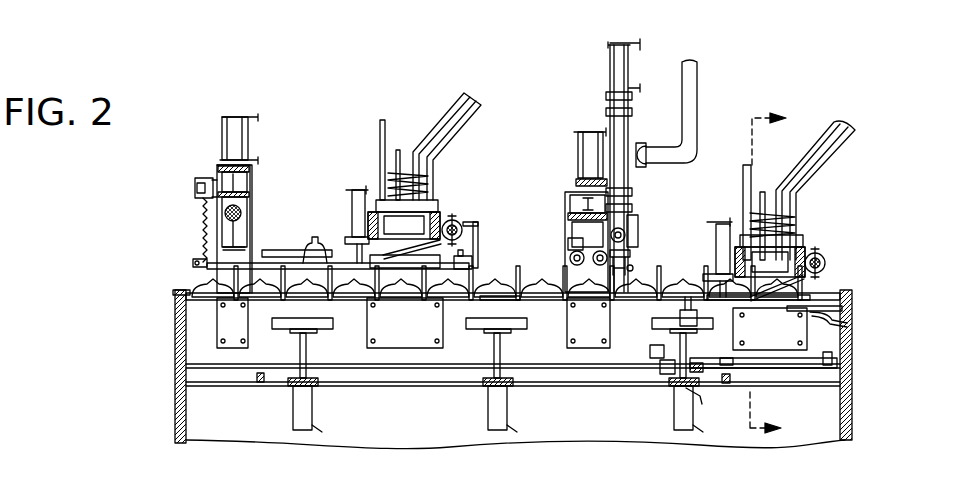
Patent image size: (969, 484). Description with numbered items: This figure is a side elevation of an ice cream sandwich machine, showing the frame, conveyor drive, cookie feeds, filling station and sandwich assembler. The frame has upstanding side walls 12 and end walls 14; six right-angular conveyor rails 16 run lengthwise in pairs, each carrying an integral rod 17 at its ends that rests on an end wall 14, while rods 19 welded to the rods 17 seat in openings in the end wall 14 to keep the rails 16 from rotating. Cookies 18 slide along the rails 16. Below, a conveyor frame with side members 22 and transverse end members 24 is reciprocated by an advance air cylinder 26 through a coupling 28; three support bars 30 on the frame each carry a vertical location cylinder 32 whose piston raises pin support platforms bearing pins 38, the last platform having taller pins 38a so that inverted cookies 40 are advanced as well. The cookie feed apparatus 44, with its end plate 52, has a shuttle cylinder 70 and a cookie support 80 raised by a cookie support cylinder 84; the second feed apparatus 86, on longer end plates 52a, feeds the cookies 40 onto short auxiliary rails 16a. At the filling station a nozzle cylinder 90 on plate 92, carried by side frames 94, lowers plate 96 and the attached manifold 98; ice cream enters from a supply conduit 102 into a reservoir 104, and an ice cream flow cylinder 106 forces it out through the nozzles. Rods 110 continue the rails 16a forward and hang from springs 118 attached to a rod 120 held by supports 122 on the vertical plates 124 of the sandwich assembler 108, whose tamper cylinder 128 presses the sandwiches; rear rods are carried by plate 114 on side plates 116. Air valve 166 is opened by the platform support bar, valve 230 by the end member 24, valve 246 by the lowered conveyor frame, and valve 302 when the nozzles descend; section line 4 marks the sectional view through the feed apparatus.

The section line 4- 4 is at (777, 265).
The side walls 12 is at (240, 438).
The end walls 14 is at (175, 347).
The conveyor rails 16 is at (190, 290).
The auxiliary conveyor rails 16a is at (300, 250).
The rods 17 is at (178, 298).
The cookies 18 is at (772, 220).
The rods 19 is at (845, 312).
The side members 22 is at (417, 384).
The end members 24 is at (258, 383).
The advance air cylinder 26 is at (782, 362).
The coupling 28 is at (694, 388).
The support bars 30 is at (312, 384).
The vertical location cylinders 32 is at (294, 412).
The pins 38 is at (633, 292).
The pins 38a is at (322, 232).
The cookies 40 is at (402, 173).
The cookie feed apparatus 44 is at (823, 131).
The end plate 52 is at (807, 328).
The end plates 52a is at (385, 330).
The shuttle cylinder 70 is at (458, 220).
The cookie support 80 is at (492, 282).
The cookie support cylinder 84 is at (358, 188).
The second feed apparatus 86 is at (441, 114).
The nozzle cylinder 90 is at (578, 150).
The plate 92 is at (577, 183).
The side frames 94 is at (570, 335).
The plate 96 is at (568, 216).
The manifold 98 is at (638, 226).
The supply conduit 102 is at (697, 78).
The reservoir 104 is at (626, 133).
The ice cream flow cylinder 106 is at (627, 60).
The sandwich assembler 108 is at (287, 163).
The rod 110 is at (198, 258).
The plate 114 is at (483, 232).
The side plates 116 is at (472, 262).
The springs 118 is at (202, 222).
The rod 120 is at (201, 178).
The supports 122 is at (198, 180).
The vertical plates 124 is at (245, 232).
The tamper cylinder 128 is at (230, 117).
The air actuated valve 166 is at (688, 308).
The air valve 230 is at (667, 362).
The air actuated valve 246 is at (645, 356).
The air actuated valve 302 is at (568, 244).